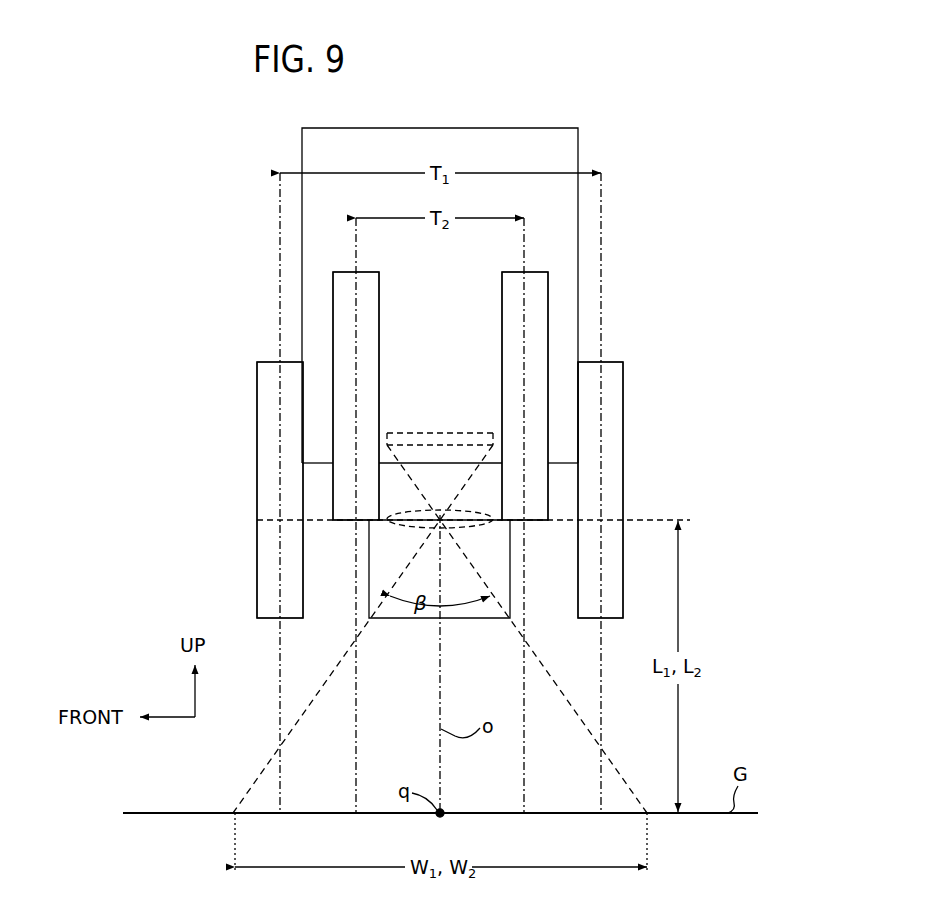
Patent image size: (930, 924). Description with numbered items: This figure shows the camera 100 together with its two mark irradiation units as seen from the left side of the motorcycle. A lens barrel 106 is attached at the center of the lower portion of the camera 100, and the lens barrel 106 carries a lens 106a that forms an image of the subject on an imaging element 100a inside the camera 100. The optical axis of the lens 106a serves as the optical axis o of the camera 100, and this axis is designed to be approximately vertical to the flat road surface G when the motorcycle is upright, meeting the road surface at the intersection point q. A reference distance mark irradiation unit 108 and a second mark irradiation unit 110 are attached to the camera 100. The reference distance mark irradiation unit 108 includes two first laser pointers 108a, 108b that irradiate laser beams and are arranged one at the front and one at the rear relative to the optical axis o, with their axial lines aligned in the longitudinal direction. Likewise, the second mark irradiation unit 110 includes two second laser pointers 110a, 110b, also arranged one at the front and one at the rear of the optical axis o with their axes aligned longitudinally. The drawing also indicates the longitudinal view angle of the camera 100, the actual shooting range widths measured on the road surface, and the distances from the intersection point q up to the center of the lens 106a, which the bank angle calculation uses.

The camera 100 is at (568, 143).
The imaging element 100a is at (423, 432).
The second mark irradiation unit 110 is at (558, 268).
The second laser pointer 110a is at (343, 313).
The second laser pointer 110b is at (540, 303).
The reference distance mark irradiation unit 108 is at (634, 356).
The first laser pointer 108a is at (268, 420).
The first laser pointer 108b is at (613, 421).
The lens barrel 106 is at (483, 619).
The lens 106a is at (400, 527).